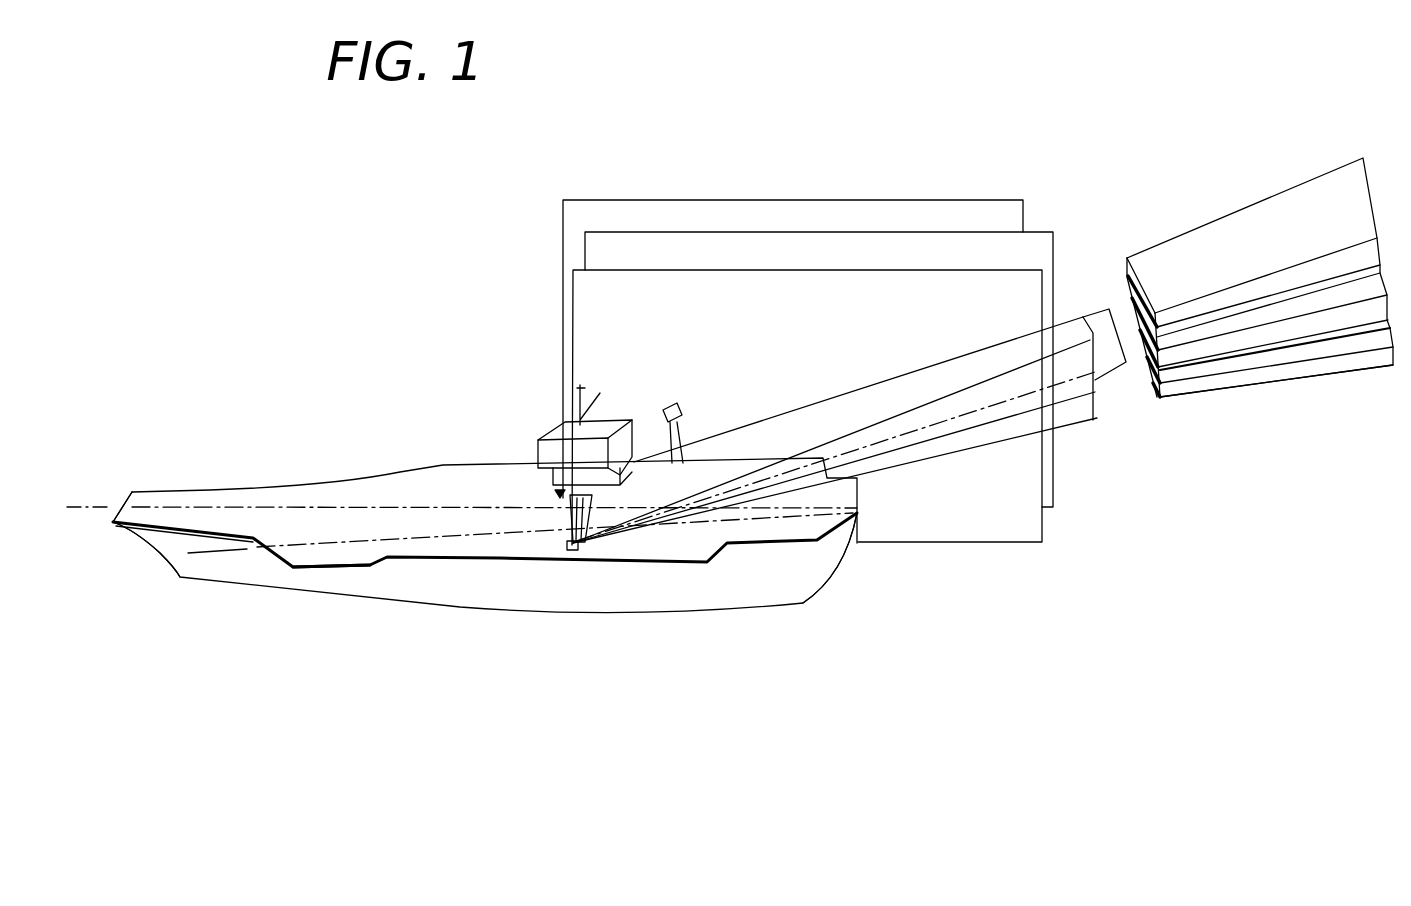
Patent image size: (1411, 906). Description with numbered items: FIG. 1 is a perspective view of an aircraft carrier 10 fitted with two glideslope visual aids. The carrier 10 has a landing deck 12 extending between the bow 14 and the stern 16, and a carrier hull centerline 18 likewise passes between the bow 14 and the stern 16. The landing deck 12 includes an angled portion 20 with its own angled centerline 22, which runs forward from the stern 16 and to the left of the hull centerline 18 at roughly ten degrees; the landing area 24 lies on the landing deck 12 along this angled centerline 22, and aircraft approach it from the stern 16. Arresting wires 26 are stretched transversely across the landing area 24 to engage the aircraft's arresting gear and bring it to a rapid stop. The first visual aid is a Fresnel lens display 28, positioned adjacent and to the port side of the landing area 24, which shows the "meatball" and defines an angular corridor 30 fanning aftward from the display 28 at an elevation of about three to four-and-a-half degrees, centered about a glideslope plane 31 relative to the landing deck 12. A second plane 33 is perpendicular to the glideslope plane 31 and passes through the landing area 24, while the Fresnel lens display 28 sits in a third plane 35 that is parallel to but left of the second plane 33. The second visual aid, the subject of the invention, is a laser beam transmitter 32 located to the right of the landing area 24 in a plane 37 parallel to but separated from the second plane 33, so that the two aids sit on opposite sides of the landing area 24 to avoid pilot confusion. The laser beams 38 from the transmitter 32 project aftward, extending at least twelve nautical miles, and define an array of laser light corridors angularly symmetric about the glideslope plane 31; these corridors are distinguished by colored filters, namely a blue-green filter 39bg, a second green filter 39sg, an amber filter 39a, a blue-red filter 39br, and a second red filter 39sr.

The aircraft carrier 10 is at (267, 457).
The landing deck 12 is at (347, 490).
The bow 14 is at (167, 558).
The stern 16 is at (837, 553).
The carrier hull centerline 18 is at (92, 505).
The angled portion 20 is at (337, 563).
The angled centerline 22 is at (223, 553).
The landing area 24 is at (550, 535).
The arresting wires 26 is at (585, 532).
The Fresnel lens display 28 is at (573, 550).
The angular corridor 30 is at (1097, 403).
The glideslope plane 31 is at (978, 422).
The laser beam transmitter 32 is at (558, 496).
The second plane 33 is at (583, 258).
The third plane 35 is at (573, 308).
The plane 37 is at (563, 223).
The laser beams 38 is at (1208, 197).
The blue-green filter 39bg is at (1127, 263).
The second green filter 39sg is at (1130, 287).
The amber filter 39a is at (1160, 357).
The blue-red filter 39br is at (1153, 397).
The second red filter 39sr is at (1177, 383).